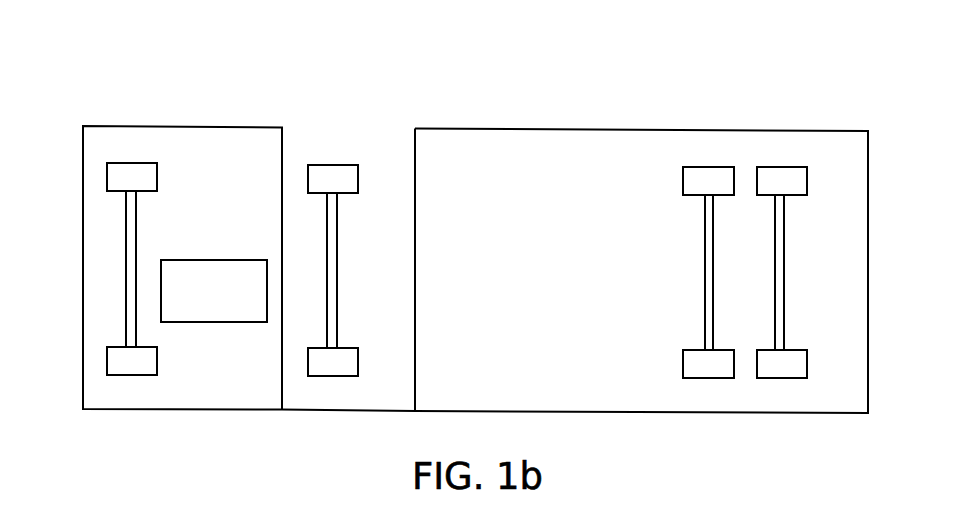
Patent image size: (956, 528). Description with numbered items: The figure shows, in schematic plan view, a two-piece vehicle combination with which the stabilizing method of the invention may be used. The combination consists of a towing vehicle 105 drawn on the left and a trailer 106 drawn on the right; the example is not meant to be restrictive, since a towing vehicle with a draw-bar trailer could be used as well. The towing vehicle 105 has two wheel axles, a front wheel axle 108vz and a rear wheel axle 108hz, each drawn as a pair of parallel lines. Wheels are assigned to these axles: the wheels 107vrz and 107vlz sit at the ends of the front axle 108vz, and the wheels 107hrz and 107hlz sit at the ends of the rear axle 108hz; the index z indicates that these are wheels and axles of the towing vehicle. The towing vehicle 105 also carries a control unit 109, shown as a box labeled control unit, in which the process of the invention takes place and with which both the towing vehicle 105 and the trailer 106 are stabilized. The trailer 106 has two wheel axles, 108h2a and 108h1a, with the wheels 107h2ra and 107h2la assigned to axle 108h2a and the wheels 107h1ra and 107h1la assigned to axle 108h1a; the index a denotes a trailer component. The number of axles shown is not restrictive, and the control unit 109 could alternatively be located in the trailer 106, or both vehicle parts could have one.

The towing vehicle 105 is at (249, 131).
The trailer 106 is at (466, 131).
The wheel 107vrz is at (147, 168).
The wheel axle 108vz is at (133, 231).
The wheel 107vlz is at (145, 372).
The control unit 109 is at (239, 322).
The wheel 107hrz is at (328, 170).
The wheel axle 108hz is at (334, 245).
The wheel 107hlz is at (327, 372).
The wheel 107h2ra is at (728, 173).
The wheel 107h1ra is at (777, 172).
The wheel axle 108h2a is at (705, 247).
The wheel axle 108h1a is at (782, 273).
The wheel 107h2la is at (727, 373).
The wheel 107h1la is at (775, 375).